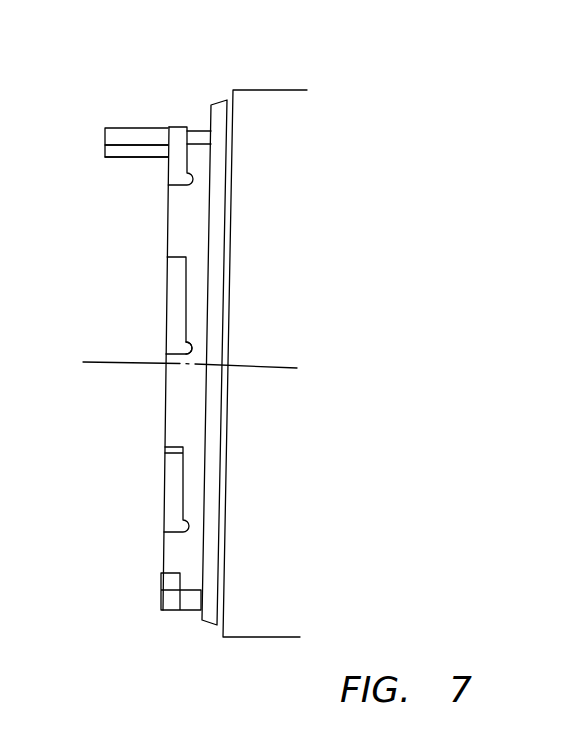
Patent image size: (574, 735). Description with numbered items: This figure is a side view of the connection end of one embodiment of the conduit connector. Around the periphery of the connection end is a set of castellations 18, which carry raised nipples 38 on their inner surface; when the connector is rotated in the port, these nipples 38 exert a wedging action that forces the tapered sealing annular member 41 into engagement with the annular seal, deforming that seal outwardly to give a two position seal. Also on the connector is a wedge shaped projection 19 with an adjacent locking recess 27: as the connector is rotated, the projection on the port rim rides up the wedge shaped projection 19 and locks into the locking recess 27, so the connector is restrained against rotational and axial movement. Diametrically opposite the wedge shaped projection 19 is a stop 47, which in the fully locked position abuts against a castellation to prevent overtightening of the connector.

The castellations 18 is at (177, 295).
The wedge shaped projection 19 is at (123, 138).
The locking recess 27 is at (135, 150).
The nipples 38 is at (191, 347).
The tapered sealing annular member 41 is at (219, 100).
The stop 47 is at (190, 608).